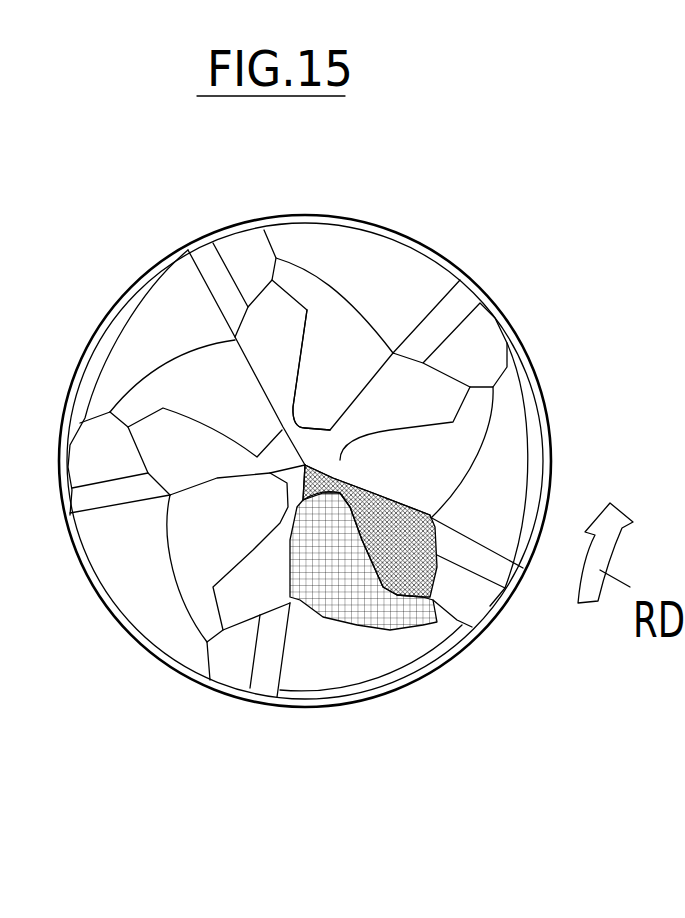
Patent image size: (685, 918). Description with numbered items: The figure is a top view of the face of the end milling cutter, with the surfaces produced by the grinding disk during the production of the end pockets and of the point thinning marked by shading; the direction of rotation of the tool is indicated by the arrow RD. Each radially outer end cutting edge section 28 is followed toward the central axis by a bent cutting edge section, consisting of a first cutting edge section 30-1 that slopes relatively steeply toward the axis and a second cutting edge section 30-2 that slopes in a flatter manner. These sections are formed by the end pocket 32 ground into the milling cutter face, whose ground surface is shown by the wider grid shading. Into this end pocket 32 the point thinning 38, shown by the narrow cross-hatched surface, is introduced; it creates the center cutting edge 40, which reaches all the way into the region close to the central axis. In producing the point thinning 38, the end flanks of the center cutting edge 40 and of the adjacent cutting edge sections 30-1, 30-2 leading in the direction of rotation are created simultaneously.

The radially outer end cutting edge section 28 is at (473, 543).
The first cutting edge section 30-1 is at (370, 493).
The second cutting edge section 30-2 is at (487, 445).
The end pocket 32 is at (323, 620).
The point thinning 38 is at (368, 628).
The center cutting edge 40 is at (320, 452).